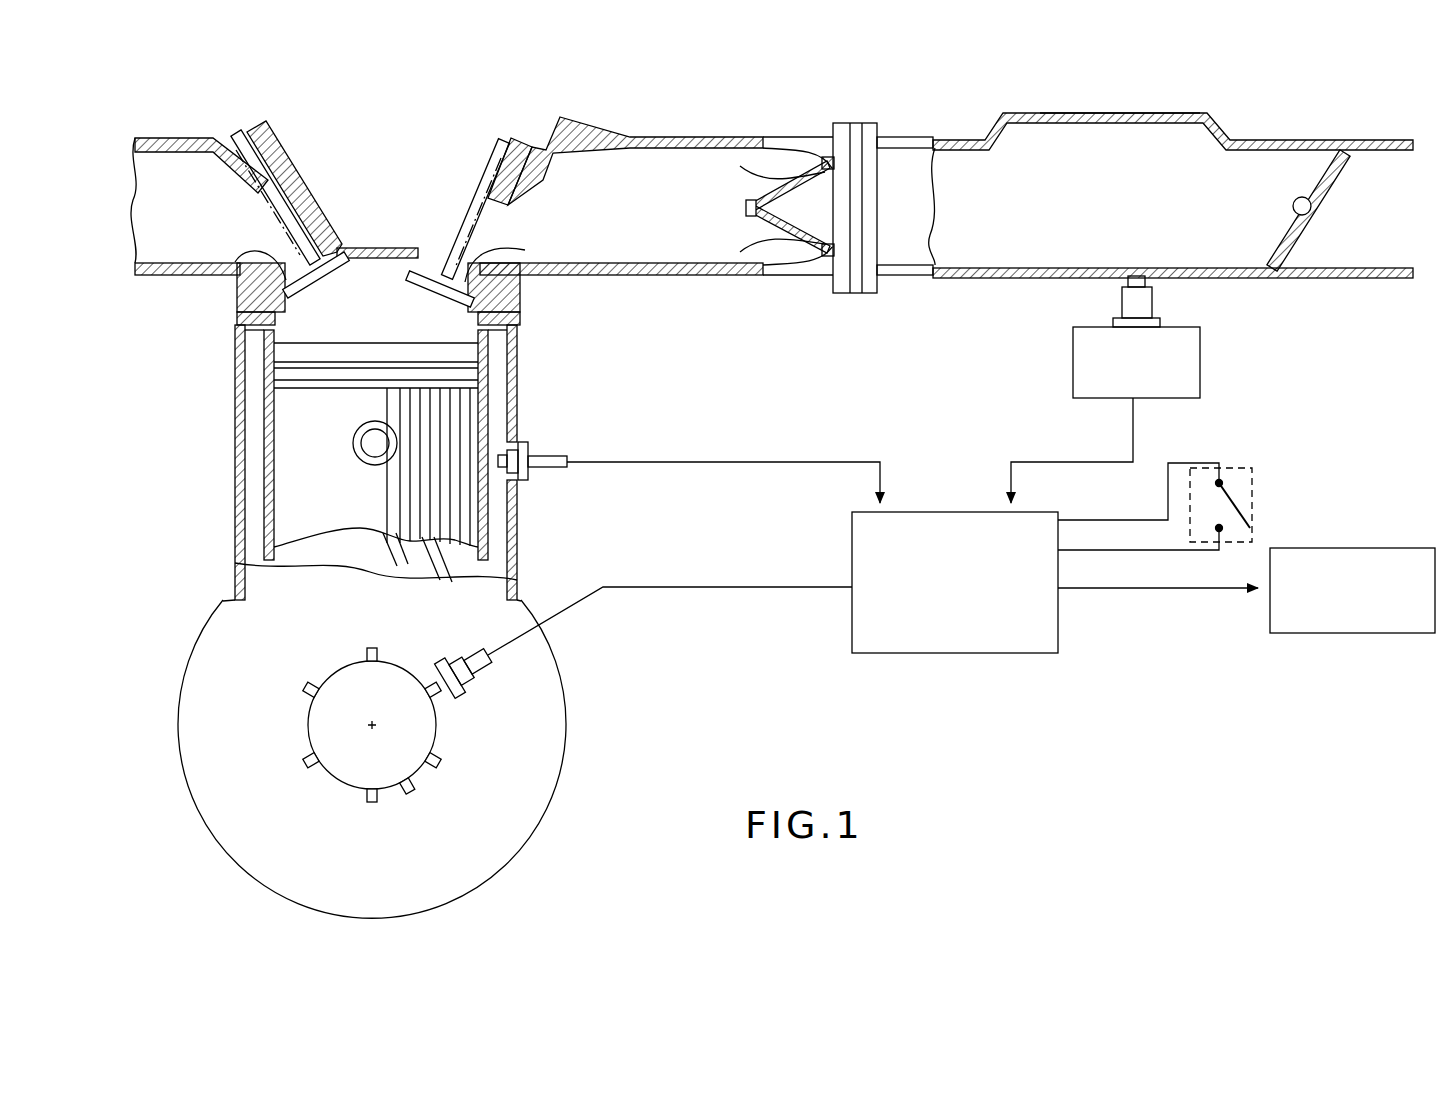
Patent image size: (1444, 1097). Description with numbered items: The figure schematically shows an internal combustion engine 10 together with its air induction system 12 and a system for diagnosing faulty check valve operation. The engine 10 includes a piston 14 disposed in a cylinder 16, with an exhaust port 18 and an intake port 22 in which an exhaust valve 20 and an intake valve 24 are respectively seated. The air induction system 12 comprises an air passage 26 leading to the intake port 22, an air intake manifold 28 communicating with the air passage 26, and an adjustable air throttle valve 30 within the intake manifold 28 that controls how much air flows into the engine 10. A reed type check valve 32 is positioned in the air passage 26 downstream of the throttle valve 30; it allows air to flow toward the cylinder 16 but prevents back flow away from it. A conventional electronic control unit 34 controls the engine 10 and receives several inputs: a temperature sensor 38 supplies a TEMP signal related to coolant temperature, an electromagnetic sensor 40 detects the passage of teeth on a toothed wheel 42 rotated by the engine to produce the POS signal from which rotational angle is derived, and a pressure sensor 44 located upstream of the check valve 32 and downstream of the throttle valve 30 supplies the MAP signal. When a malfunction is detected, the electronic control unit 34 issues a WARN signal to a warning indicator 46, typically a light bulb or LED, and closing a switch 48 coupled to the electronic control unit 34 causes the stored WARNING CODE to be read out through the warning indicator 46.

The internal combustion engine 10 is at (212, 410).
The air induction system 12 is at (1086, 108).
The piston 14 is at (315, 432).
The cylinder 16 is at (235, 330).
The exhaust port 18 is at (208, 270).
The exhaust valve 20 is at (312, 247).
The intake port 22 is at (565, 272).
The intake valve 24 is at (433, 247).
The air passage 26 is at (660, 190).
The air intake manifold 28 is at (1250, 140).
The air throttle valve 30 is at (1318, 178).
The check valve 32 is at (790, 210).
The electronic control unit 34 is at (1000, 642).
The temperature sensor 38 is at (548, 458).
The electromagnetic sensor 40 is at (473, 680).
The toothed wheel 42 is at (335, 717).
The pressure sensor 44 is at (1195, 373).
The warning indicator 46 is at (1302, 628).
The switch 48 is at (1252, 512).